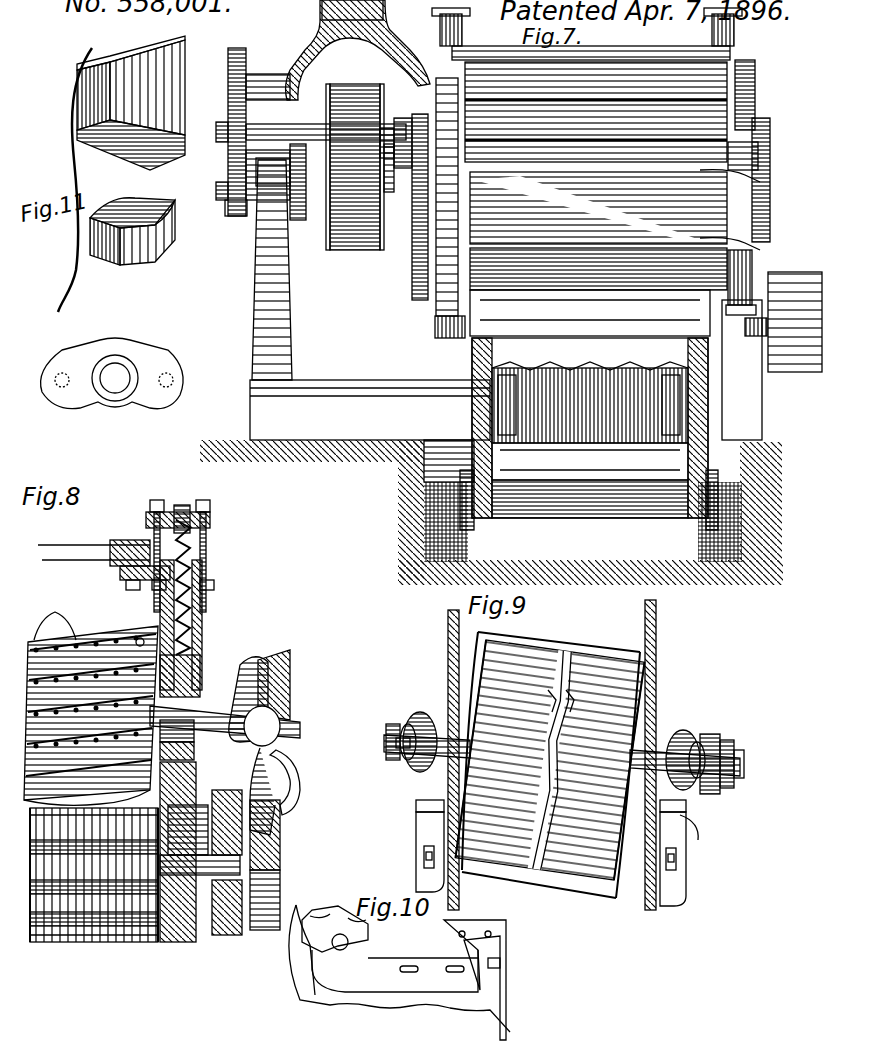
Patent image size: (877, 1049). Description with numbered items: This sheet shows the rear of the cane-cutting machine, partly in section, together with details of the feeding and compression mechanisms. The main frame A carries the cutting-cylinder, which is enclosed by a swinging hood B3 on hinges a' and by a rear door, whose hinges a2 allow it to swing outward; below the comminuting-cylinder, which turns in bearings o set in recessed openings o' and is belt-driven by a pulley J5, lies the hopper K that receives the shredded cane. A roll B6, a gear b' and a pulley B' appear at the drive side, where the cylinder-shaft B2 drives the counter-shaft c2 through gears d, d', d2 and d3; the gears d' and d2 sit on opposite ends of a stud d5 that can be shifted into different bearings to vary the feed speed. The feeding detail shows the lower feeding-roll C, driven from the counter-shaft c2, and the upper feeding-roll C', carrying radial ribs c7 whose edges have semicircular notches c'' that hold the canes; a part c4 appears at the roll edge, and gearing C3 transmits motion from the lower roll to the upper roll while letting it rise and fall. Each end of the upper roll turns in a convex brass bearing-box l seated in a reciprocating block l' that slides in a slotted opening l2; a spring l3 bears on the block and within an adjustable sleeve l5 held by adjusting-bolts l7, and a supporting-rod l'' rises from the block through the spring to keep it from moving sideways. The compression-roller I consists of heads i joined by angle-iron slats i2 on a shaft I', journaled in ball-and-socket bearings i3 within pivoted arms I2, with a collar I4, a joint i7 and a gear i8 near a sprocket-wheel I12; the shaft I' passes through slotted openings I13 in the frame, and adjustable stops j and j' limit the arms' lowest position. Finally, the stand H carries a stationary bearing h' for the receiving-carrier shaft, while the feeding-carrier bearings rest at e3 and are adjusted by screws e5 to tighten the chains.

In FIG. 11, the reciprocating block l' is at (131, 115).
In FIG. 8, the reciprocating block l' is at (189, 665).
In FIG. 11, the bearing-box l is at (132, 242).
In FIG. 8, the bearing-box l is at (189, 710).
In FIG. 11, the adjustable tube or sleeve l5 is at (112, 356).
In FIG. 8, the adjustable tube or sleeve l5 is at (176, 508).
In FIG. 7, the main frame A is at (252, 410).
In FIG. 7, the hopper K is at (589, 434).
In FIG. 7, the hinges a' is at (608, 69).
In FIG. 7, the swinging hood B3 is at (596, 112).
In FIG. 7, the roller B6 is at (598, 254).
In FIG. 7, the hinges a2 is at (770, 160).
In FIG. 7, the pulley J5 is at (800, 284).
In FIG. 7, the recessed opening o' is at (745, 282).
In FIG. 7, the bearings o is at (585, 308).
In FIG. 7, the gear b' is at (418, 207).
In FIG. 7, the pulley B' is at (355, 177).
In FIG. 7, the cylinder-shaft B2 is at (408, 205).
In FIG. 7, the counter-shaft c2 is at (304, 124).
In FIG. 7, the gear d3 is at (228, 62).
In FIG. 7, the stud or shaft d5 is at (216, 190).
In FIG. 7, the gear d2 is at (232, 216).
In FIG. 7, the gear d is at (273, 175).
In FIG. 7, the gear d' is at (300, 199).
In FIG. 8, the slotted opening l2 is at (200, 628).
In FIG. 8, the spring l3 is at (192, 600).
In FIG. 8, the supporting-rod l'' is at (187, 501).
In FIG. 8, the adjusting-bolts l7 is at (226, 520).
In FIG. 8, the upper feeding-roll C' is at (91, 713).
In FIG. 8, the notches c'' is at (55, 617).
In FIG. 8, the radial ribs or flutes c7 is at (140, 640).
In FIG. 8, the cylinder edge c4 is at (136, 772).
In FIG. 8, the lower feeding-roll C is at (94, 891).
In FIG. 8, the gearing C3 is at (247, 796).
In FIG. 9, the slotted openings I13 is at (716, 675).
In FIG. 9, the heads i is at (488, 690).
In FIG. 9, the longitudinal slats i2 is at (530, 652).
In FIG. 9, the compression-roller I is at (562, 698).
In FIG. 9, the pivoted arms I2 is at (424, 712).
In FIG. 9, the ball-and-socket bearings i3 is at (404, 758).
In FIG. 9, the bar joint i7 is at (582, 664).
In FIG. 9, the hub I4 is at (680, 742).
In FIG. 9, the gear i8 is at (712, 736).
In FIG. 9, the sprocket-wheel I12 is at (734, 738).
In FIG. 9, the shaft I' is at (753, 774).
In FIG. 9, the bracket j' is at (418, 846).
In FIG. 9, the adjustable stops j is at (679, 853).
In FIG. 10, the stand H is at (472, 1002).
In FIG. 10, the stationary bearing h' is at (335, 912).
In FIG. 10, the bearing seat e3 is at (408, 962).
In FIG. 10, the adjusting-screws e5 is at (502, 963).